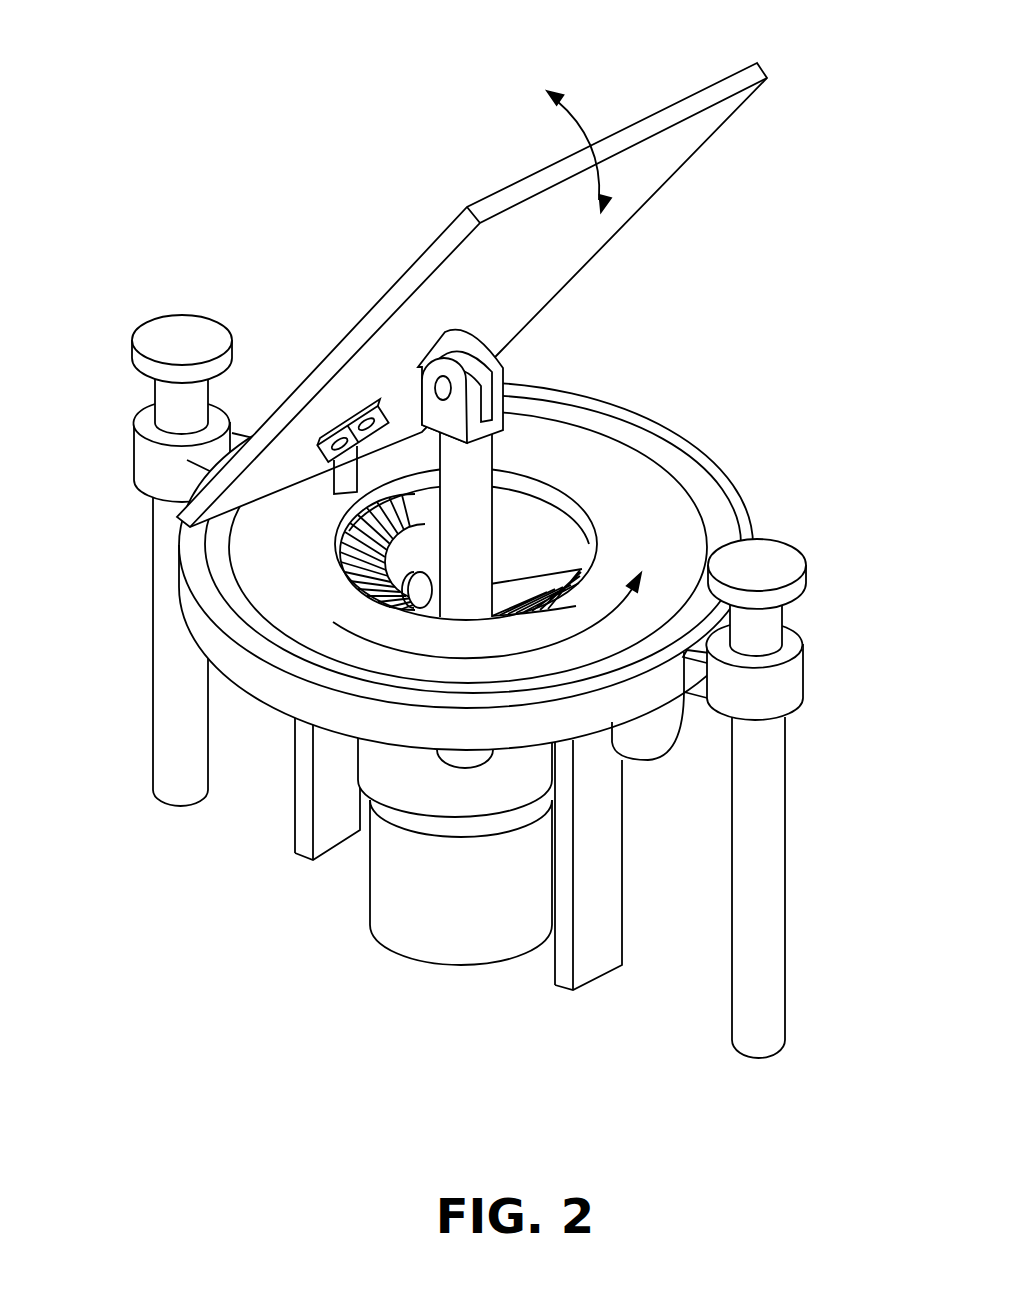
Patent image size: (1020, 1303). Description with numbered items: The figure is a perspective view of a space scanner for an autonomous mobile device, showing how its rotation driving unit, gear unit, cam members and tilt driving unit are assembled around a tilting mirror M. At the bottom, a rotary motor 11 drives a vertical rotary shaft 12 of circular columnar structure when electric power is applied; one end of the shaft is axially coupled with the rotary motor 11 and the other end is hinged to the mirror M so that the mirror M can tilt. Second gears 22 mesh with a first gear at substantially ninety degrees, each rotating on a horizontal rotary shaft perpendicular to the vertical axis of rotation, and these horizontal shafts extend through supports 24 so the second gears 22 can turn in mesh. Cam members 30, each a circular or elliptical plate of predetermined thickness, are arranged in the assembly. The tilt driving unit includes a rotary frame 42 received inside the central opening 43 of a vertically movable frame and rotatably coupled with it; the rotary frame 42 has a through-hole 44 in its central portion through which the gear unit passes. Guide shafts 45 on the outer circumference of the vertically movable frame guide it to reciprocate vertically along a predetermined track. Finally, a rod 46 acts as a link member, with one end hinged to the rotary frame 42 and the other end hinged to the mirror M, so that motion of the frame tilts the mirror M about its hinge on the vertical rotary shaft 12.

The mirror M is at (691, 103).
The rotary motor 11 is at (438, 953).
The vertical rotary shaft 12 is at (483, 478).
The second gears 22 is at (338, 560).
The supports 24 is at (593, 967).
The cam members 30 is at (655, 737).
The rotary frame 42 is at (648, 500).
The central opening 43 is at (712, 518).
The through-hole 44 is at (536, 542).
The guide shafts 45 is at (778, 1020).
The rod 46 is at (356, 481).